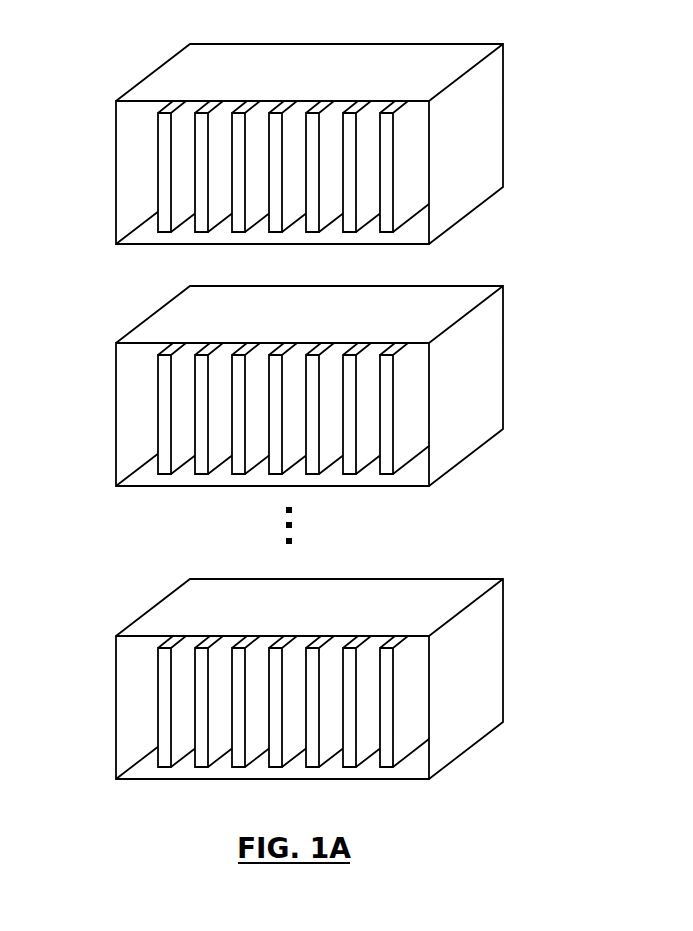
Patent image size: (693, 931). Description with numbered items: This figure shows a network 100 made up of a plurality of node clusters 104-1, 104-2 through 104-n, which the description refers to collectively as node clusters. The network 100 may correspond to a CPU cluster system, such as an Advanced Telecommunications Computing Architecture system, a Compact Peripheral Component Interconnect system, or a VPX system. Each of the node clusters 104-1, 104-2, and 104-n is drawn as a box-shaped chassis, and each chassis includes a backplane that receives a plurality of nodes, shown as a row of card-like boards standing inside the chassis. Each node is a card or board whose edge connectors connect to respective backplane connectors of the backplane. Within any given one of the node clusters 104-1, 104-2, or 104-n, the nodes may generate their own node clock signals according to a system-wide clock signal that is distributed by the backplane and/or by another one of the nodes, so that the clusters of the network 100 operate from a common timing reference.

The network 100 is at (604, 114).
The node cluster 104-1 is at (322, 151).
The node cluster 104-2 is at (322, 390).
The node cluster 104-n is at (322, 687).